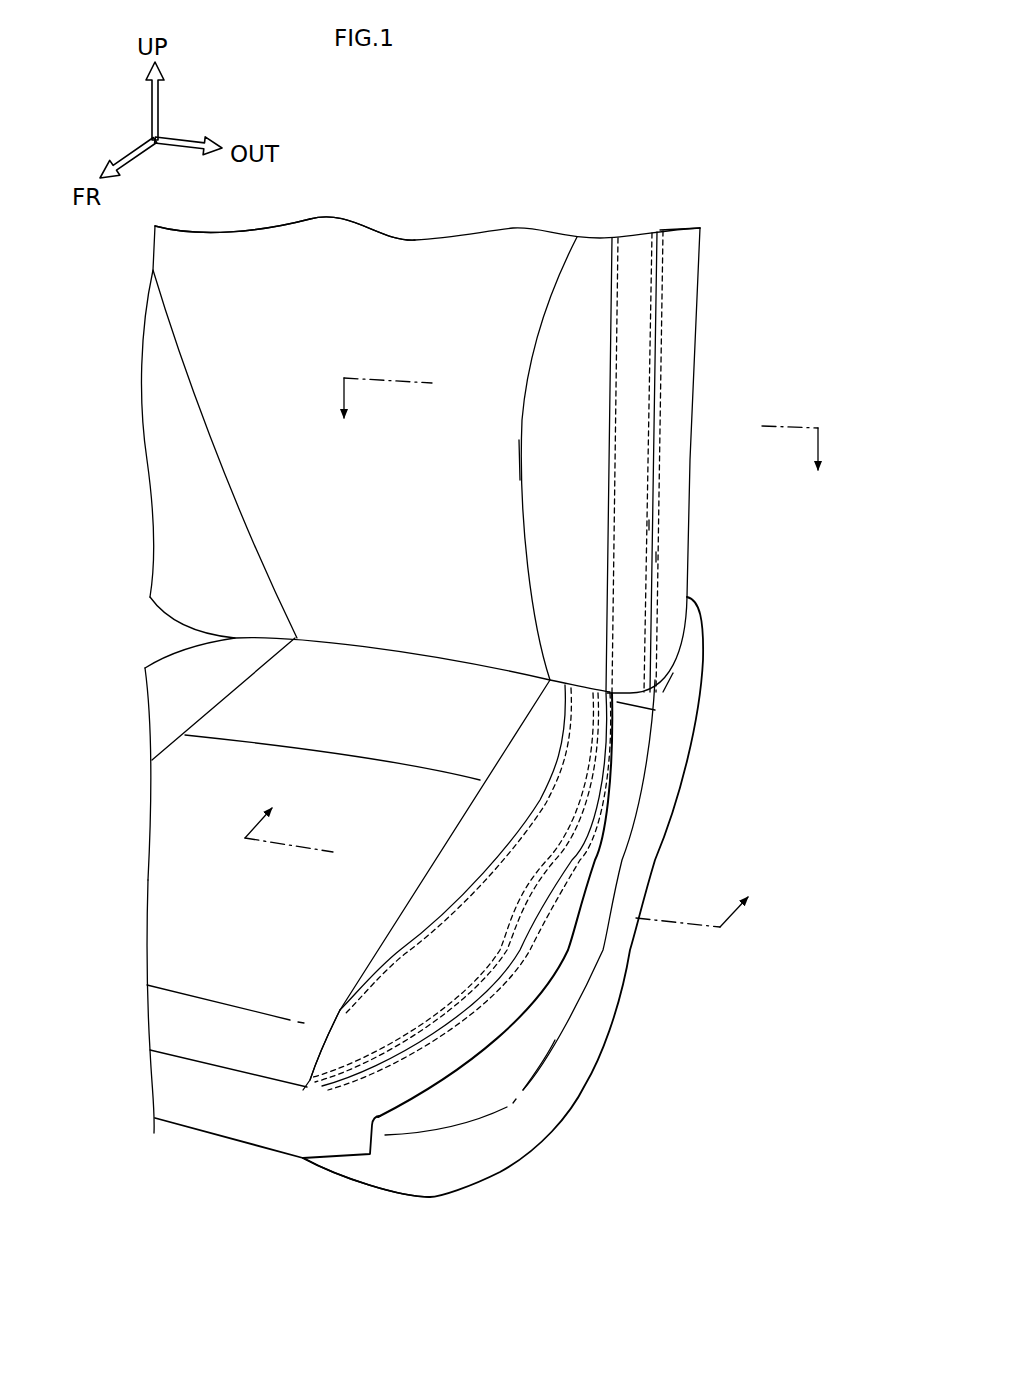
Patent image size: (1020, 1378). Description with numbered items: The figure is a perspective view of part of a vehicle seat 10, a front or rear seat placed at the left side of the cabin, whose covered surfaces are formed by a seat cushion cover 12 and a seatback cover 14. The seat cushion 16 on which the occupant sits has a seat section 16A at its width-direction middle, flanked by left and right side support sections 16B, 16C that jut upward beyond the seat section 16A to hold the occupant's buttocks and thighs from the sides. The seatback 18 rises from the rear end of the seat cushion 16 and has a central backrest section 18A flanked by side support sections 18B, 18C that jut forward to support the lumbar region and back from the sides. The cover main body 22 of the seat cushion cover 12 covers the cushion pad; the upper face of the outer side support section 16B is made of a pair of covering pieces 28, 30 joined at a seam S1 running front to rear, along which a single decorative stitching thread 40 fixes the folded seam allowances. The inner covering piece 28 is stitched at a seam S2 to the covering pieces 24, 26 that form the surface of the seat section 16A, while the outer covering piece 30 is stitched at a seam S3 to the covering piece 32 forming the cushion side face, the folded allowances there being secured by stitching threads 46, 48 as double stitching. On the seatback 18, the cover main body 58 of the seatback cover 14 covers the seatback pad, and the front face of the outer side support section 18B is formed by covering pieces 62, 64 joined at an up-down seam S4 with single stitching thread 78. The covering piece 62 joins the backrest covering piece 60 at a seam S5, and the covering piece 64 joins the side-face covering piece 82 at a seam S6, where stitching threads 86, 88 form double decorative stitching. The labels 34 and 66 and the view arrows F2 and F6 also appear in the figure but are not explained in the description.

The vehicle seat 10 is at (458, 150).
The seat cushion cover 12 is at (259, 1149).
The seatback cover 14 is at (760, 406).
The seat cushion 16 is at (258, 1162).
The seat section 16A is at (185, 850).
The side support section 16B is at (463, 840).
The side support section 16C is at (168, 700).
The seatback 18 is at (738, 372).
The backrest section 18A is at (335, 272).
The side support section 18B is at (578, 272).
The side support section 18C is at (165, 382).
The cover main body 22 is at (225, 1095).
The covering piece 24 is at (185, 905).
The covering piece 26 is at (382, 672).
The covering piece 28 is at (520, 747).
The covering piece 30 is at (568, 793).
The covering piece 32 is at (518, 993).
The seat cushion rear panel seam 34 is at (180, 672).
The stitching thread 40 is at (522, 850).
The stitching thread 46 is at (523, 930).
The stitching thread 48 is at (518, 952).
The cover main body 58 is at (700, 290).
The covering piece 60 is at (420, 280).
The covering piece 62 is at (540, 372).
The covering piece 64 is at (638, 393).
The seat back other side panel boundary 66 is at (172, 452).
The stitching thread 78 is at (617, 452).
The covering piece 82 is at (683, 333).
The stitching thread 86 is at (650, 525).
The stitching thread 88 is at (657, 557).
The seam S1 is at (480, 890).
The seam S2 is at (390, 920).
The seam S3 is at (582, 832).
The seam S4 is at (610, 470).
The seam S5 is at (525, 470).
The seam S6 is at (658, 492).
The view direction F2 is at (505, 852).
The view direction F6 is at (580, 440).